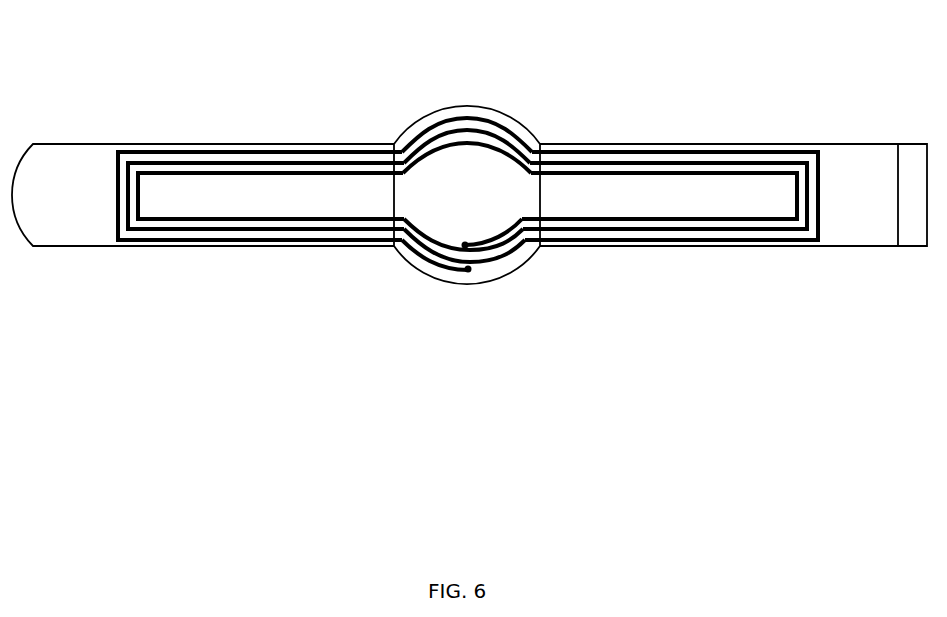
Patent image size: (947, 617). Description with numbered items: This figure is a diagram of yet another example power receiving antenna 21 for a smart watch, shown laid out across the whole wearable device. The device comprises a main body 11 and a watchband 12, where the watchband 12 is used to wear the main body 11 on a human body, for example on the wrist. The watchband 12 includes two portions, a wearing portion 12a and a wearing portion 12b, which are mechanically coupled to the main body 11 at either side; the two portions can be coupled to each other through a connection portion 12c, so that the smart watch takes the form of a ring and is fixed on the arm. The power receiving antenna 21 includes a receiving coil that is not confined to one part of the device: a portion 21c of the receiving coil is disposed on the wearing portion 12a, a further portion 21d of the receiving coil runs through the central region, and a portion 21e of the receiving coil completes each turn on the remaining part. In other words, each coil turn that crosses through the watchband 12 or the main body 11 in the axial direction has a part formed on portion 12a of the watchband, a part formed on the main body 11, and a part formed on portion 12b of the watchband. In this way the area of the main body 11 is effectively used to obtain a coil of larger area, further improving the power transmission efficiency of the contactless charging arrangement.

The main body 11 is at (445, 278).
The watchband 12 is at (469, 259).
The wearing portion 12a is at (103, 238).
The wearing portion 12b is at (638, 243).
The connection portion 12c is at (873, 218).
The power receiving antenna 21 is at (468, 146).
The portion of the receiving coil 21c is at (325, 150).
The arc coil portion 21d is at (462, 117).
The portion of the receiving coil 21e is at (659, 156).